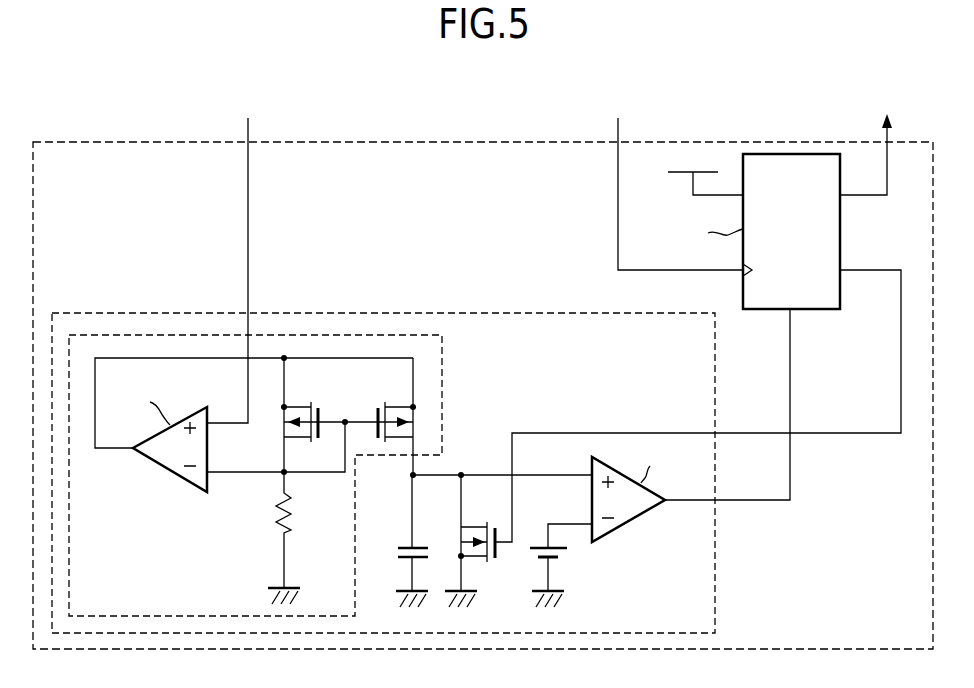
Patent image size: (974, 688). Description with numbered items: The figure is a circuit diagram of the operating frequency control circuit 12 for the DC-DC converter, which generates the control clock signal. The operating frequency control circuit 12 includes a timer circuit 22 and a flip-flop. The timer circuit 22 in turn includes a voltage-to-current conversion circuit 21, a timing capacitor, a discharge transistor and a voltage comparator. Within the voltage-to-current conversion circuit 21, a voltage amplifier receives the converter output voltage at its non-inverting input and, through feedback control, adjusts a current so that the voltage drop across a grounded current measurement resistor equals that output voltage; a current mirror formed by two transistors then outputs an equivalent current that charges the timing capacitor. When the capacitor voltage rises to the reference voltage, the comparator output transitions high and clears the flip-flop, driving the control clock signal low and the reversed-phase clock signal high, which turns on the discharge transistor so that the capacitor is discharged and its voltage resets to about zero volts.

The operating frequency control circuit 12 is at (445, 142).
The voltage-to-current conversion circuit 21 is at (442, 380).
The timer circuit 22 is at (443, 313).